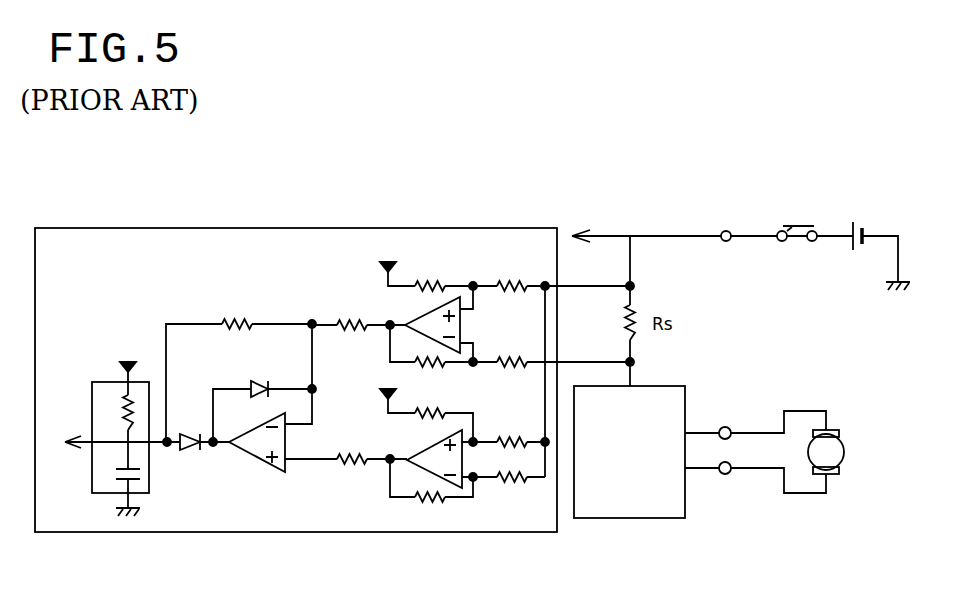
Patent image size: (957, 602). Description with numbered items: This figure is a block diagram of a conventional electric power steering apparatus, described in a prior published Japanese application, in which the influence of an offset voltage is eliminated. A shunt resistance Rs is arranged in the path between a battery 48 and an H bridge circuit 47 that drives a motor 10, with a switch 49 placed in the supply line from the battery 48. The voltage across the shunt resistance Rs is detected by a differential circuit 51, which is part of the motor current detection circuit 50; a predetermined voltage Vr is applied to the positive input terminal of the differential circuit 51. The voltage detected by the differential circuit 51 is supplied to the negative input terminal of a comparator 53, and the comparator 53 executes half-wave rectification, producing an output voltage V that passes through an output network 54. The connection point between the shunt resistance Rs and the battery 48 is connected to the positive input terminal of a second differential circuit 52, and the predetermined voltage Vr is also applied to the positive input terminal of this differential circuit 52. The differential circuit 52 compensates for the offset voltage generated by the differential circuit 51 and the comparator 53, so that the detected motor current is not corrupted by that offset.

The motor 10 is at (845, 450).
The H bridge circuit 47 is at (665, 386).
The battery 48 is at (847, 252).
The switch 49 is at (791, 246).
The motor current detection circuit 50 is at (283, 228).
The differential circuit 51 is at (463, 332).
The differential circuit 52 is at (429, 450).
The comparator 53 is at (255, 466).
The RC filter (R3, C1) 54 is at (149, 468).